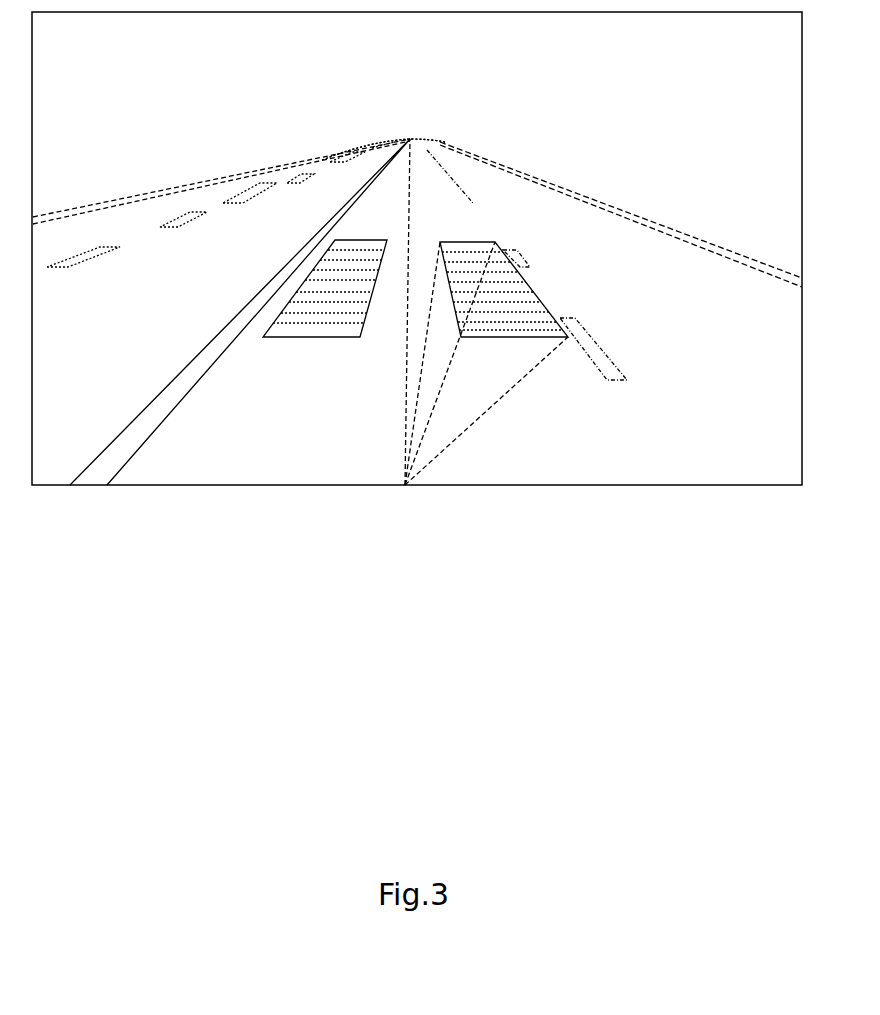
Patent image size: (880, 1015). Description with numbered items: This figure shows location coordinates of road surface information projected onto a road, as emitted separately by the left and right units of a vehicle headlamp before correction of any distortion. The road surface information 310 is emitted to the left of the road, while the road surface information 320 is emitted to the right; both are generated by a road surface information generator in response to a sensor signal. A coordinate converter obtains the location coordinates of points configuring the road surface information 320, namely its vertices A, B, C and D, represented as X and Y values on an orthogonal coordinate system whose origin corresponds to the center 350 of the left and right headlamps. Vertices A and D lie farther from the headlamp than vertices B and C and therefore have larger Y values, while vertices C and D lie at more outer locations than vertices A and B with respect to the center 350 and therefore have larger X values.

The road surface information emitted to the left 310 is at (310, 338).
The road surface information emitted to the right 320 is at (532, 283).
The center of the left and right headlamps 350 is at (418, 150).